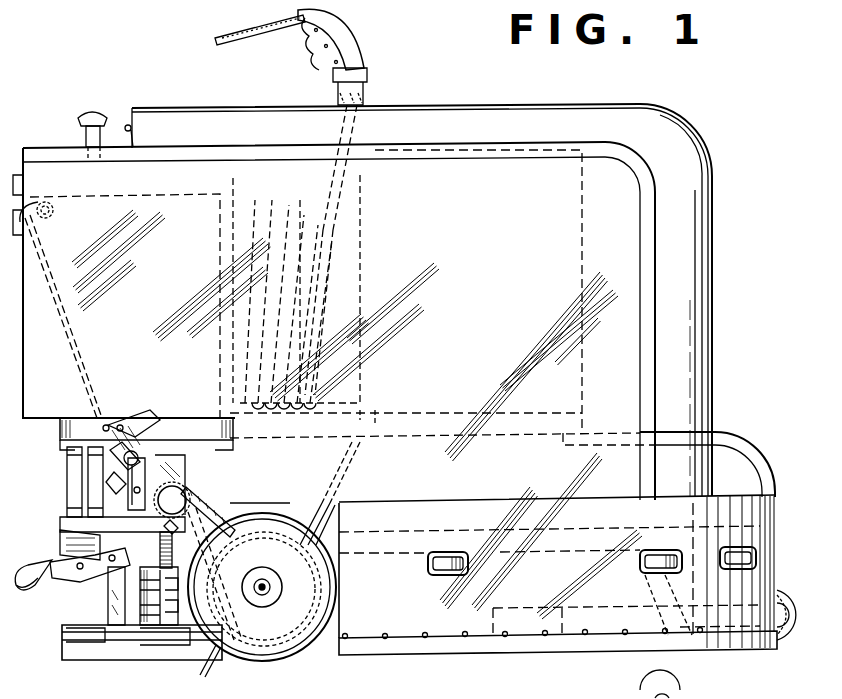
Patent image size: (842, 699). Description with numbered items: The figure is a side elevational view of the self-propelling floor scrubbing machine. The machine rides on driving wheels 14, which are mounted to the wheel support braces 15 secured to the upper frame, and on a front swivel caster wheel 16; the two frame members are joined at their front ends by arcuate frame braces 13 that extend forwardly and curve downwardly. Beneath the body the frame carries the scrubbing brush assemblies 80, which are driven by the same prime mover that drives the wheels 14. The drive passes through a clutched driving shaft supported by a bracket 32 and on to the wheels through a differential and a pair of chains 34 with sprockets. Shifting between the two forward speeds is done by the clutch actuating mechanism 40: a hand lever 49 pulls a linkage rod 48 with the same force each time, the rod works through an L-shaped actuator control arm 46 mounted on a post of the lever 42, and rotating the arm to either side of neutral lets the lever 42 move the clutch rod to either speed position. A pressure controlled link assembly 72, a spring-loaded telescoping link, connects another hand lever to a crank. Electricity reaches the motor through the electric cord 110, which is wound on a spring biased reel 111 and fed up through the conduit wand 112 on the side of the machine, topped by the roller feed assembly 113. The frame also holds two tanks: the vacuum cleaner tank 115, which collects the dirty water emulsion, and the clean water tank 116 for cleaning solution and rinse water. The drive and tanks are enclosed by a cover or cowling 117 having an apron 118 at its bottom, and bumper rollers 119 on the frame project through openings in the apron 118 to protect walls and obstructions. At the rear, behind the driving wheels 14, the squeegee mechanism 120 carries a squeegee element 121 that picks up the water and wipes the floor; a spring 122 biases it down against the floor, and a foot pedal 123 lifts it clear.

The arcuate frame brace 13 is at (739, 440).
The driving wheel 14 is at (292, 650).
The wheel support brace 15 is at (328, 515).
The caster wheel 16 is at (779, 646).
The bracket 32 is at (183, 475).
The chain 34 is at (210, 508).
The clutch actuating mechanism 40 is at (146, 420).
The lever 42 is at (126, 492).
The actuator control arm 46 is at (108, 464).
The linkage rod 48 is at (60, 431).
The hand lever 49 is at (30, 204).
The pressure controlled link assembly 72 is at (86, 138).
The scrubbing brush assembly 80 is at (661, 614).
The electric cord 110 is at (230, 40).
The spring biased reel 111 is at (347, 378).
The conduit wand 112 is at (368, 90).
The roller feed assembly 113 is at (348, 45).
The vacuum cleaner tank 115 is at (152, 210).
The clean water tank 116 is at (515, 168).
The cover or cowling 117 is at (692, 218).
The apron 118 is at (480, 607).
The bumper roller 119 is at (455, 552).
The squeegee mechanism 120 is at (121, 662).
The squeegee element 121 is at (170, 652).
The spring 122 is at (158, 555).
The foot pedal 123 is at (40, 590).